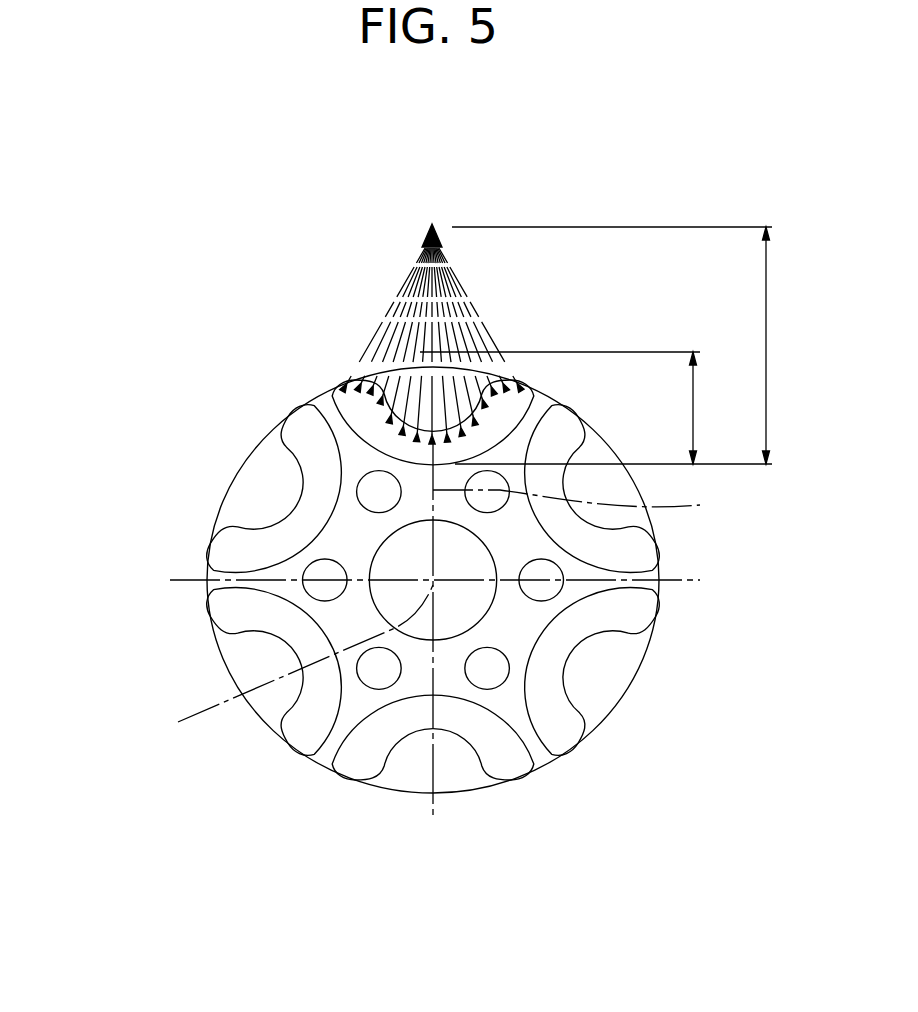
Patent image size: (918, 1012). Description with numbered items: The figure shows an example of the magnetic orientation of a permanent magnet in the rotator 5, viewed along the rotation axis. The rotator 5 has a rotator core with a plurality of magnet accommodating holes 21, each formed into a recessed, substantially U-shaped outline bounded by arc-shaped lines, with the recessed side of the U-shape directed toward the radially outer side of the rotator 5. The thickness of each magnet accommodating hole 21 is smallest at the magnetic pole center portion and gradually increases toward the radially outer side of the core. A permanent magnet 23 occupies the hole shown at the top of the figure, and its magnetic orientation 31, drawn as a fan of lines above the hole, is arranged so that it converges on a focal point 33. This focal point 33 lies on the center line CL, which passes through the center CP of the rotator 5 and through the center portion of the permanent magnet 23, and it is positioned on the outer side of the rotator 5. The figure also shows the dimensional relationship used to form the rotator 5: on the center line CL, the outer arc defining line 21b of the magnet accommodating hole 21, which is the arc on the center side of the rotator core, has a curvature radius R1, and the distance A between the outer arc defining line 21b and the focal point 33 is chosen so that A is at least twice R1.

The rotator 5 is at (187, 285).
The magnet accommodating hole 21 is at (395, 562).
The outer arc defining line 21b is at (550, 420).
The permanent magnet 23 is at (340, 433).
The magnetic orientation 31 is at (392, 304).
The focal point 33 is at (435, 226).
The center line CL is at (586, 505).
The center CP is at (286, 675).
The distance A is at (612, 345).
The curvature radius R1 is at (560, 408).